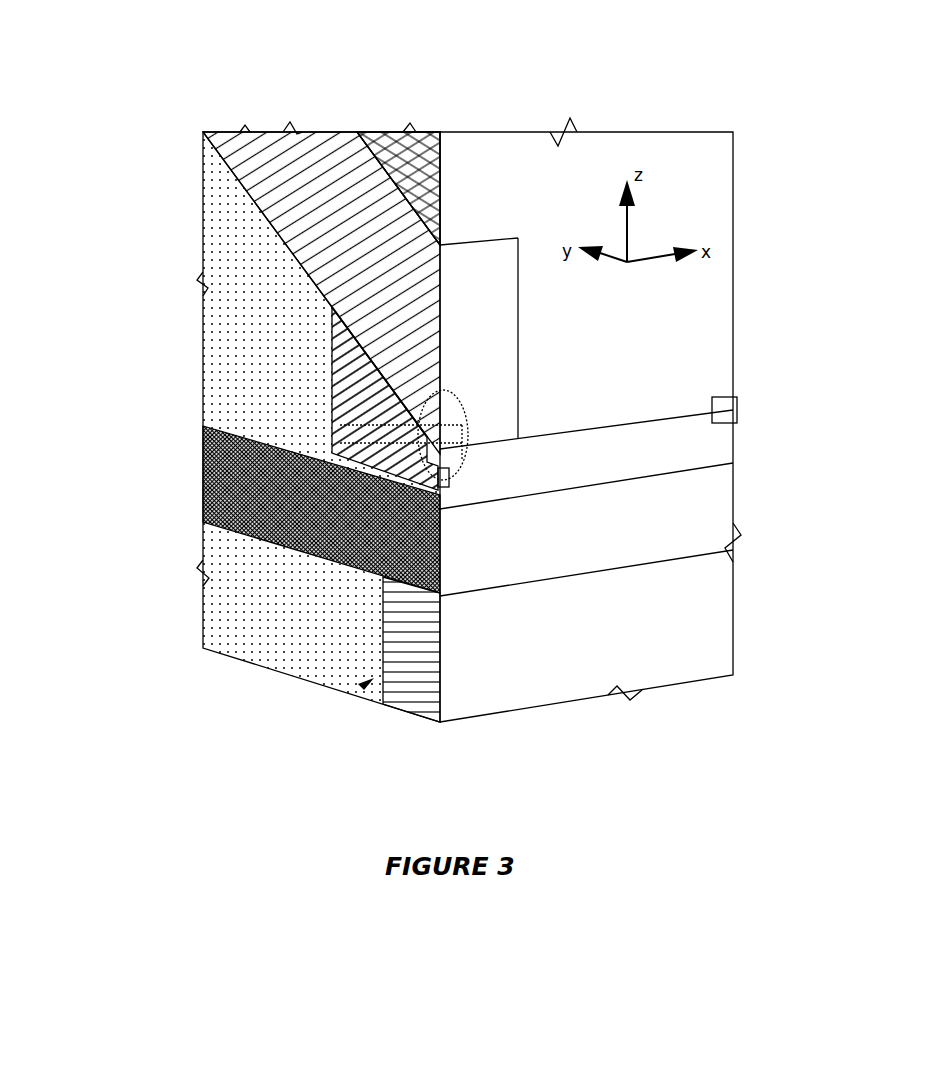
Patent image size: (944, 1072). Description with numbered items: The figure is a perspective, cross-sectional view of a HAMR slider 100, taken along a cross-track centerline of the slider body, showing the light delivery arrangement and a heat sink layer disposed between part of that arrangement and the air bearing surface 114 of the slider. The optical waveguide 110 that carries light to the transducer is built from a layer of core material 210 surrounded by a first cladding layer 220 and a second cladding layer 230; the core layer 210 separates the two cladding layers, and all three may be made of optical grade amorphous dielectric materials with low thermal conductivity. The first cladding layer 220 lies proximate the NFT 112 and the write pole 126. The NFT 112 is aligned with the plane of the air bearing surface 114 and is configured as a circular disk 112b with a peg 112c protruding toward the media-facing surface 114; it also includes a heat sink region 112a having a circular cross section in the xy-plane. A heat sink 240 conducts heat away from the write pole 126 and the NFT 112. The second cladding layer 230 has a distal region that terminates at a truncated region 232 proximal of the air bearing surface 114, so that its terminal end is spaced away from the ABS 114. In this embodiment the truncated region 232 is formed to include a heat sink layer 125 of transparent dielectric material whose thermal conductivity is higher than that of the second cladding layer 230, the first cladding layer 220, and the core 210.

The HAMR slider 100 is at (698, 85).
The optical waveguide 110 is at (130, 430).
The NFT 112 is at (332, 442).
The heat sink region 112a is at (342, 398).
The circular disk 112b is at (478, 456).
The peg 112c is at (452, 479).
The air bearing surface 114 is at (731, 422).
The heat sink layer 125 is at (398, 683).
The write pole 126 is at (316, 131).
The core layer 210 is at (204, 498).
The first cladding layer 220 is at (204, 231).
The second cladding layer 230 is at (216, 627).
The truncated region 232 is at (366, 684).
The heat sink 240 is at (384, 131).